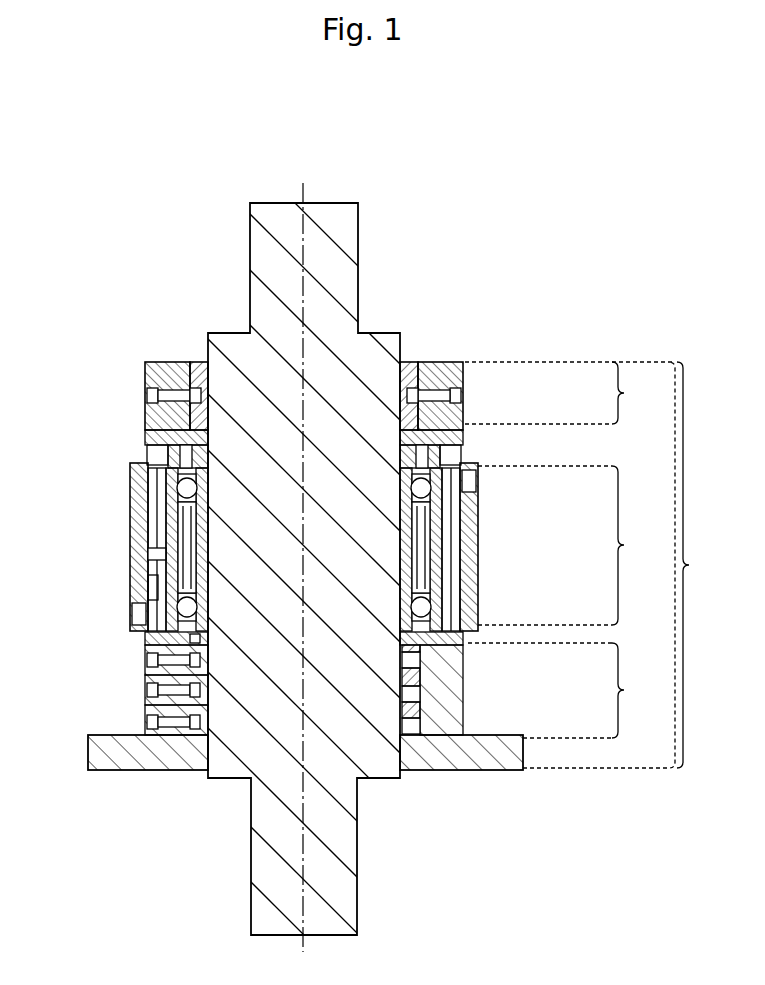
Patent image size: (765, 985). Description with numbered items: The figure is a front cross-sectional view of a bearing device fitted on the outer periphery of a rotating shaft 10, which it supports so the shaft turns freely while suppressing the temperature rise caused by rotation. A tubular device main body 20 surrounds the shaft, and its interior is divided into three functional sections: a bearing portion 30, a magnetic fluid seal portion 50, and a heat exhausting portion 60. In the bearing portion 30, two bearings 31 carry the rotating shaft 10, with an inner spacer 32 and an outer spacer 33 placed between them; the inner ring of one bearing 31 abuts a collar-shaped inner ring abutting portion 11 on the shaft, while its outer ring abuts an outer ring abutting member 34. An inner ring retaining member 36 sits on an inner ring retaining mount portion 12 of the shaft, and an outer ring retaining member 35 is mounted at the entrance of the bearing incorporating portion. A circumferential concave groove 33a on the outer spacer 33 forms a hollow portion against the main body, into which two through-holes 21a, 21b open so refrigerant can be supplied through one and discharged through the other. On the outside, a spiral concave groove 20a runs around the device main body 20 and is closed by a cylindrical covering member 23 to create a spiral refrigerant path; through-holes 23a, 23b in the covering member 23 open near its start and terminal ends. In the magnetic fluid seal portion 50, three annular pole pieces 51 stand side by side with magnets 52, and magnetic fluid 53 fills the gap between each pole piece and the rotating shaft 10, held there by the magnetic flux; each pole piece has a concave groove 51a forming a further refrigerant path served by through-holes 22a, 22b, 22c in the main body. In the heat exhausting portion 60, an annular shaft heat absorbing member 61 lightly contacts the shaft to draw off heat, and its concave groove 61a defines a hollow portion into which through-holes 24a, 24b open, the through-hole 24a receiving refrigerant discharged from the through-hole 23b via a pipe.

The rotating shaft 10 is at (372, 235).
The inner ring abutting portion 11 is at (150, 638).
The inner ring retaining mount portion 12 is at (170, 452).
The device main body 20 is at (403, 566).
The concave groove 20a is at (148, 592).
The through-hole 21a is at (150, 541).
The through-hole 21b is at (458, 541).
The through-hole 22a is at (152, 722).
The through-hole 22b is at (147, 693).
The through-hole 22c is at (147, 664).
The covering member 23 is at (132, 502).
The through-hole 23a is at (135, 616).
The through-hole 23b is at (478, 484).
The through-hole 24a is at (463, 398).
The through-hole 24b is at (147, 395).
The bearing portion 30 is at (565, 545).
The bearing 31 is at (445, 496).
The inner spacer 32 is at (480, 548).
The outer spacer 33 is at (480, 572).
The concave groove 33a is at (150, 555).
The outer ring abutting member 34 is at (148, 649).
The outer ring retaining member 35 is at (148, 464).
The inner ring retaining member 36 is at (147, 433).
The magnetic fluid seal portion 50 is at (560, 690).
The pole piece 51 is at (420, 660).
The concave groove 51a is at (146, 669).
The magnet 52 is at (420, 678).
The magnetic fluid 53 is at (405, 648).
The heat exhausting portion 60 is at (570, 393).
The shaft heat absorbing member 61 is at (198, 362).
The concave groove 61a is at (165, 362).